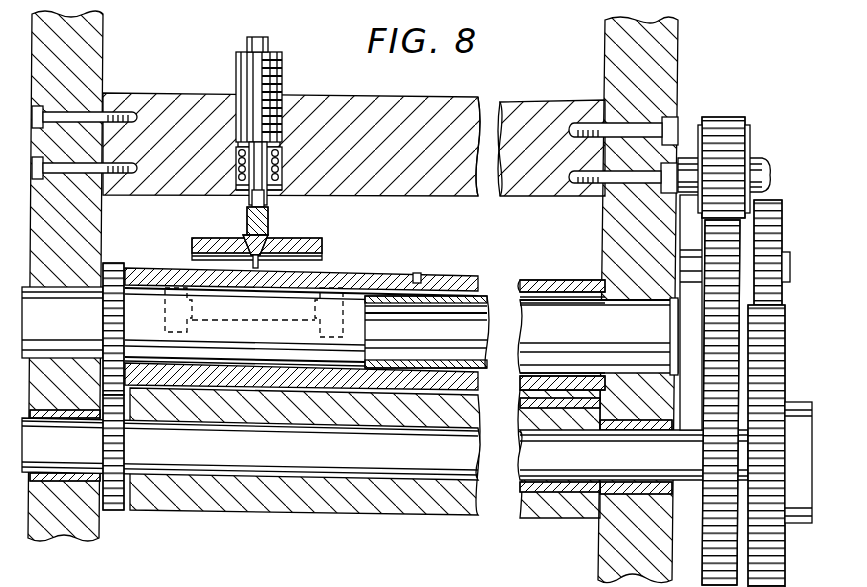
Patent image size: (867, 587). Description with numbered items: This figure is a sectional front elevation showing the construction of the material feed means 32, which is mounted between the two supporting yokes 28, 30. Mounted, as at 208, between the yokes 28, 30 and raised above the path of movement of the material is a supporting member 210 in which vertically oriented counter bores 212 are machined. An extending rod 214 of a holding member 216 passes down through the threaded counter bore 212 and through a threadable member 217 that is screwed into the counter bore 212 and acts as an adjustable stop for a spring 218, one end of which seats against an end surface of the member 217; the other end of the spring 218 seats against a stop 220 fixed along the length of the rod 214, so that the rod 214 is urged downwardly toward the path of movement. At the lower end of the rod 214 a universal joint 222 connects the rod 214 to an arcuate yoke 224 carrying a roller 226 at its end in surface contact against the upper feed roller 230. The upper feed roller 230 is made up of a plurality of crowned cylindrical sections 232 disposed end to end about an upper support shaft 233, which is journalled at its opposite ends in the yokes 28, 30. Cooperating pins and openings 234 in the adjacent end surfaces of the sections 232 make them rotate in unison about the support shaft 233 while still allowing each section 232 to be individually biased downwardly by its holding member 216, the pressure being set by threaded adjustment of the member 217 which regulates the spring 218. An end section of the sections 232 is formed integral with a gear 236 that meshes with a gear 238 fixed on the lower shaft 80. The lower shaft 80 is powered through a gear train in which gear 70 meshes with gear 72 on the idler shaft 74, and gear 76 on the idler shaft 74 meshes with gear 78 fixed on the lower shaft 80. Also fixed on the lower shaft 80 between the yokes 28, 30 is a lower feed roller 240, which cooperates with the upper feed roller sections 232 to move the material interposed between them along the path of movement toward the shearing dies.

The supporting yoke 28 is at (680, 50).
The supporting yoke 30 is at (103, 44).
The material feed means 32 is at (480, 91).
The gear 70 is at (748, 130).
The gear 72 is at (749, 148).
The idler shaft 74 is at (688, 280).
The gear 76 is at (782, 233).
The gear 78 is at (748, 579).
The lower shaft 80 is at (707, 481).
The mounting 208 is at (97, 115).
The supporting member 210 is at (340, 90).
The counter bore 212 is at (243, 115).
The extending rod 214 is at (247, 45).
The holding member 216 is at (229, 231).
The threadable member 217 is at (282, 70).
The spring 218 is at (275, 180).
The spring 220 is at (238, 181).
The universal joint 222 is at (275, 233).
The arcuate yoke 224 is at (320, 246).
The roller 226 is at (322, 327).
The upper feed roller 230 is at (577, 279).
The crowned cylindrical section 232 is at (468, 277).
The upper support shaft 233 is at (542, 347).
The cooperating pins and openings 234 is at (424, 275).
The gear 236 is at (125, 268).
The gear 238 is at (118, 512).
The lower feed roller 240 is at (462, 508).